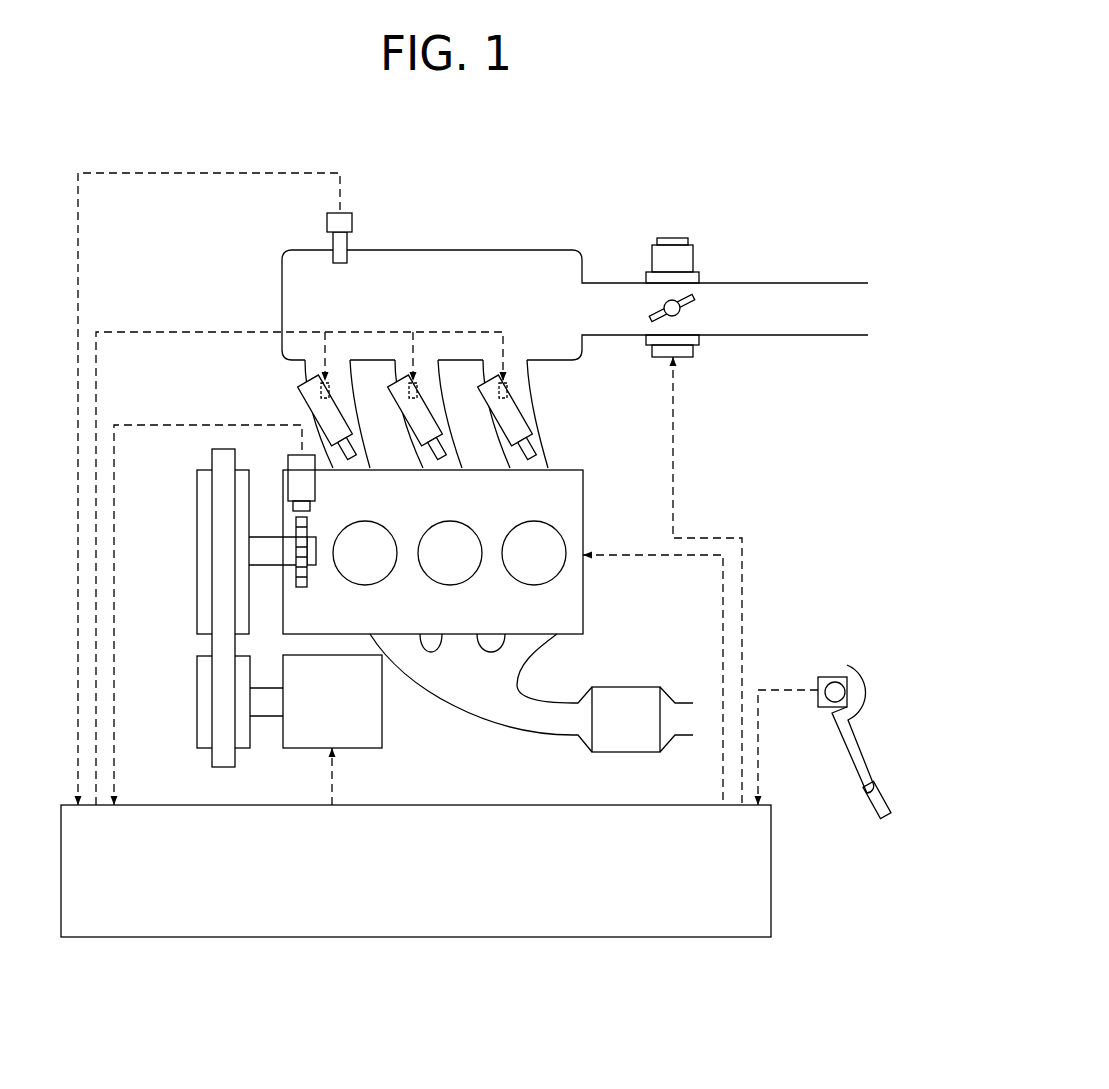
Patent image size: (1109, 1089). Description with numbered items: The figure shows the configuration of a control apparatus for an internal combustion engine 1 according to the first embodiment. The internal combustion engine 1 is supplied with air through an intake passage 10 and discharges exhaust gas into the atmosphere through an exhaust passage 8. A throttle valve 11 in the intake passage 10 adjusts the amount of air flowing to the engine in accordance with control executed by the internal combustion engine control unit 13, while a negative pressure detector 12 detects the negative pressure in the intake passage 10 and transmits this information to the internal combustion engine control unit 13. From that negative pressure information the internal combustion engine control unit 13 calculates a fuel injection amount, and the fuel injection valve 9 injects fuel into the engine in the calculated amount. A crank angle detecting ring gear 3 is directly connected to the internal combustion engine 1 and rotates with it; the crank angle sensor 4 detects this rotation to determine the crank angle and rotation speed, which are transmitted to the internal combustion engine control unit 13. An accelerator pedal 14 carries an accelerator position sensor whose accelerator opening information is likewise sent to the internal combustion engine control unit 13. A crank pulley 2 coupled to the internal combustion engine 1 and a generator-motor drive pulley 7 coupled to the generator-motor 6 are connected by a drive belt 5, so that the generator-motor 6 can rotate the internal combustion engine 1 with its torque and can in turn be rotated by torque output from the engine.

The internal combustion engine 1 is at (583, 503).
The crank pulley 2 is at (196, 555).
The crank angle detecting ring gear 3 is at (308, 583).
The crank angle sensor 4 is at (316, 483).
The drive belt 5 is at (210, 455).
The generator-motor 6 is at (355, 750).
The generator-motor drive pulley 7 is at (196, 702).
The exhaust passage 8 is at (447, 697).
The fuel injection valve 9 is at (308, 392).
The intake passage 10 is at (528, 385).
The throttle valve 11 is at (696, 303).
The negative pressure detector 12 is at (327, 235).
The internal combustion engine control unit 13 is at (771, 880).
The accelerator pedal 14 is at (860, 667).